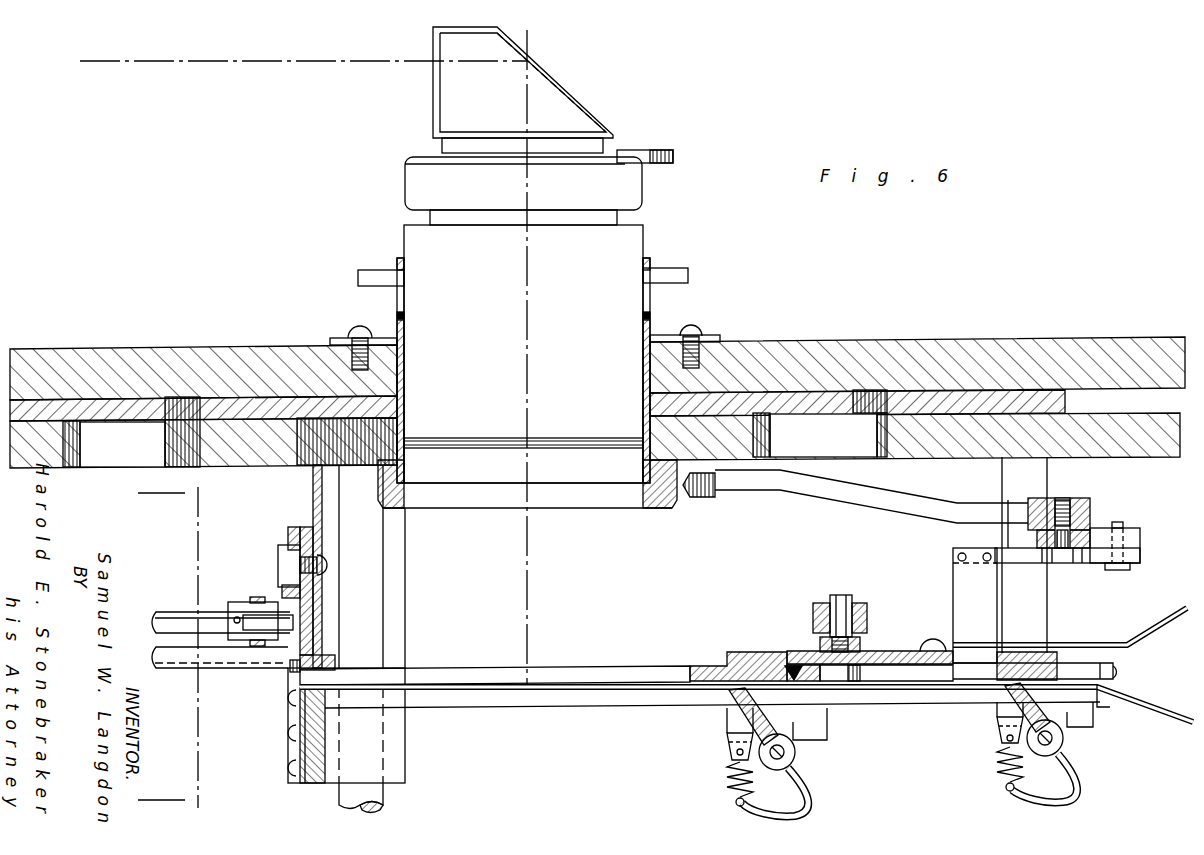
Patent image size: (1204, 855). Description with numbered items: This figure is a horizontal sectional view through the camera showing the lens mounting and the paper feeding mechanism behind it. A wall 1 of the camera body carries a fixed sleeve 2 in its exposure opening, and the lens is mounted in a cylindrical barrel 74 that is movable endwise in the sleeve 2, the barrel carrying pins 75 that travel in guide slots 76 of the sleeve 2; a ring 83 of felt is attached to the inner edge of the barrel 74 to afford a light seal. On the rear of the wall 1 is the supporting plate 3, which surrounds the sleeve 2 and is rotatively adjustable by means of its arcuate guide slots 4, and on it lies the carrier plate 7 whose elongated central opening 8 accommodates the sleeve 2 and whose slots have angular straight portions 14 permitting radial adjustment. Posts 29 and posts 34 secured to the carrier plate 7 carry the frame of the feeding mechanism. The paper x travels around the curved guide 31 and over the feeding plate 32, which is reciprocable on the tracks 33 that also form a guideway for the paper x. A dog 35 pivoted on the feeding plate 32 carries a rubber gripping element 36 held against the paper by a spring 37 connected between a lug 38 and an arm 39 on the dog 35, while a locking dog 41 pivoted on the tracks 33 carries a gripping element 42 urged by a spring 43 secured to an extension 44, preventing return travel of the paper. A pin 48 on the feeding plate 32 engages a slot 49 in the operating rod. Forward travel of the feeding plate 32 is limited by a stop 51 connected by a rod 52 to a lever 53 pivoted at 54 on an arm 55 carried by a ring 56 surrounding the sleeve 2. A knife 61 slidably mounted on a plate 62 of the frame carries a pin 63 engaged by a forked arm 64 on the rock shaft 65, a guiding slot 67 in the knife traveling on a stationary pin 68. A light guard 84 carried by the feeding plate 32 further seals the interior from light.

The wall of camera body 1 is at (784, 346).
The sleeve 2 is at (643, 344).
The supporting plate 3 is at (1070, 399).
The arcuate guide slots 4 is at (168, 419).
The carrier plate 7 is at (1180, 458).
The elongated central opening 8 is at (358, 465).
The angular straight portions 14 is at (128, 460).
The posts 29 is at (386, 796).
The curved guide 31 is at (1175, 722).
The feeding plate 32 is at (712, 662).
The tracks 33 is at (617, 672).
The posts 34 is at (1040, 634).
The dog 35 is at (797, 748).
The paper gripping element 36 is at (730, 700).
The spring 37 is at (727, 778).
The lug 38 is at (730, 748).
The arm 39 is at (745, 808).
The locking dog 41 is at (1065, 748).
The rubber gripping element 42 is at (1000, 700).
The spring 43 is at (997, 763).
The extension 44 is at (1015, 796).
The pin 48 is at (844, 598).
The slot 49 is at (813, 618).
The stop 51 is at (955, 608).
The rod 52 is at (1025, 568).
The lever 53 is at (1097, 534).
The pivot 54 is at (1075, 568).
The arm 55 is at (880, 508).
The ring 56 is at (695, 500).
The knife 61 is at (300, 660).
The plate 62 is at (316, 612).
The pin 63 is at (240, 604).
The forked arm 64 is at (255, 642).
The rock shaft 65 is at (172, 618).
The guiding slot 67 is at (278, 556).
The stationary pin 68 is at (282, 581).
The cylindrical barrel 74 is at (640, 238).
The pins 75 is at (368, 270).
The guide slots 76 is at (397, 303).
The ring of felt 83 is at (638, 450).
The light guard 84 is at (1148, 642).
The paper x is at (632, 690).